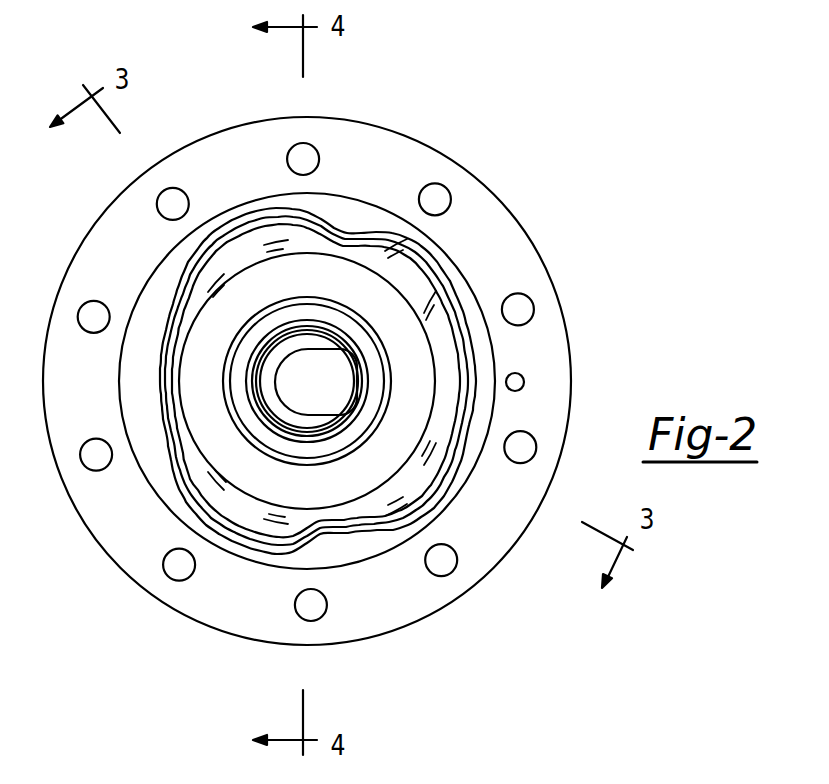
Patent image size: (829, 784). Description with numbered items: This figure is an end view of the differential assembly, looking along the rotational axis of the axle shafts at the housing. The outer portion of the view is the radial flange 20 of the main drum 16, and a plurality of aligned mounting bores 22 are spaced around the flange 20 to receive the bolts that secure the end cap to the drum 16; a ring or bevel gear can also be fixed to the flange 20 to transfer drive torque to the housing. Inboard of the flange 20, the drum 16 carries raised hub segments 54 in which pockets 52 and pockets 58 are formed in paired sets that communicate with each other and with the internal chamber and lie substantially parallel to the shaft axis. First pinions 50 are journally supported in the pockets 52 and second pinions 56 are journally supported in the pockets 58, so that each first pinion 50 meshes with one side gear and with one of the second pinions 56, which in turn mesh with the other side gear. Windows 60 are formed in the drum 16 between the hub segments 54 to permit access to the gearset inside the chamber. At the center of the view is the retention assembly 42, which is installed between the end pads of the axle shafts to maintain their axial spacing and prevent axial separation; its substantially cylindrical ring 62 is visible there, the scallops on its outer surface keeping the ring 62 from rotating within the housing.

The main drum 16 is at (358, 487).
The radial flange 20 is at (502, 227).
The mounting bores 22 is at (168, 194).
The retention assembly 42 is at (300, 338).
The first pinions 50 is at (392, 492).
The pockets 52 is at (427, 450).
The raised hub segments 54 is at (480, 397).
The second pinions 56 is at (405, 276).
The pockets 58 is at (447, 337).
The windows 60 is at (393, 247).
The ring 62 is at (270, 386).